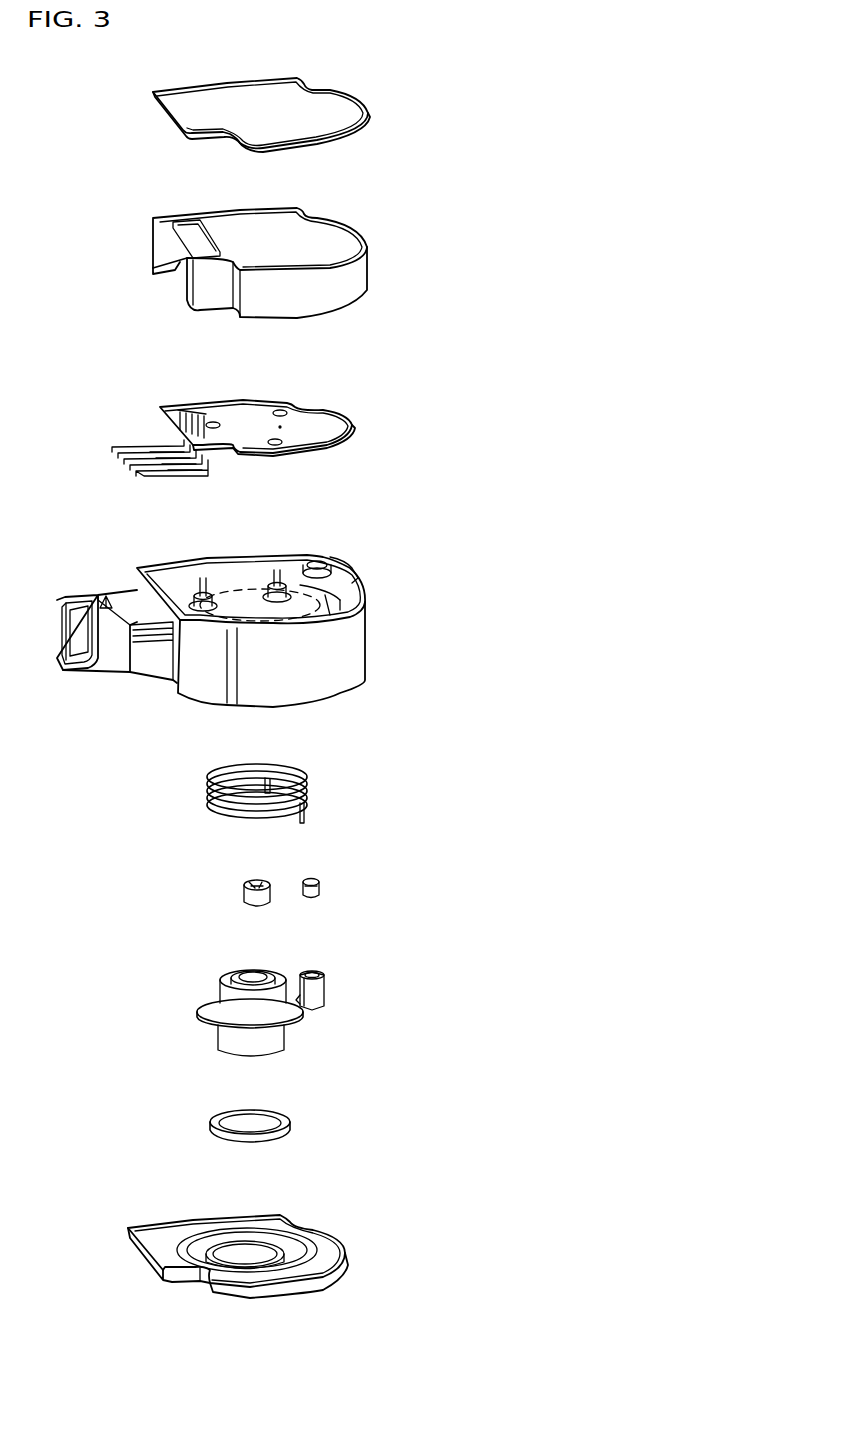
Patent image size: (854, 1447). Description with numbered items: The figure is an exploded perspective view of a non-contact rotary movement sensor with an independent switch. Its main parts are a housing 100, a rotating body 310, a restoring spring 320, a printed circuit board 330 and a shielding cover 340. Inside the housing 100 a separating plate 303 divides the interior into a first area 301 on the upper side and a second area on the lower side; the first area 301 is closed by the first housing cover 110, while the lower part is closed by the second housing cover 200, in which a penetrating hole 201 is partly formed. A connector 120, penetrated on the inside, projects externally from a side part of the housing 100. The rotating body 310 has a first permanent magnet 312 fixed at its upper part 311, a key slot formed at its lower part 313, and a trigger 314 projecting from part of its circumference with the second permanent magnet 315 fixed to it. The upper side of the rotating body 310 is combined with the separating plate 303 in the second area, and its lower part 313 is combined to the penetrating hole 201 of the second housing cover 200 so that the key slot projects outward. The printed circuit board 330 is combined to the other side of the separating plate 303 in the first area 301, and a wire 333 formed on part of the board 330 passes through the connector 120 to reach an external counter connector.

The first housing cover 110 is at (340, 118).
The shielding cover 340 is at (327, 240).
The printed circuit board 330 is at (317, 428).
The wire 333 is at (126, 447).
The housing 100 is at (330, 677).
The connector 120 is at (113, 673).
The first area 301 is at (350, 573).
The separating plate 303 is at (327, 608).
The restoring spring 320 is at (307, 802).
The first permanent magnet 312 is at (247, 893).
The second permanent magnet 315 is at (320, 890).
The rotating body 310 is at (267, 1046).
The upper part 311 is at (228, 998).
The lower part 313 is at (237, 1040).
The trigger 314 is at (320, 990).
The second housing cover 200 is at (272, 1228).
The penetrating hole 201 is at (237, 1257).